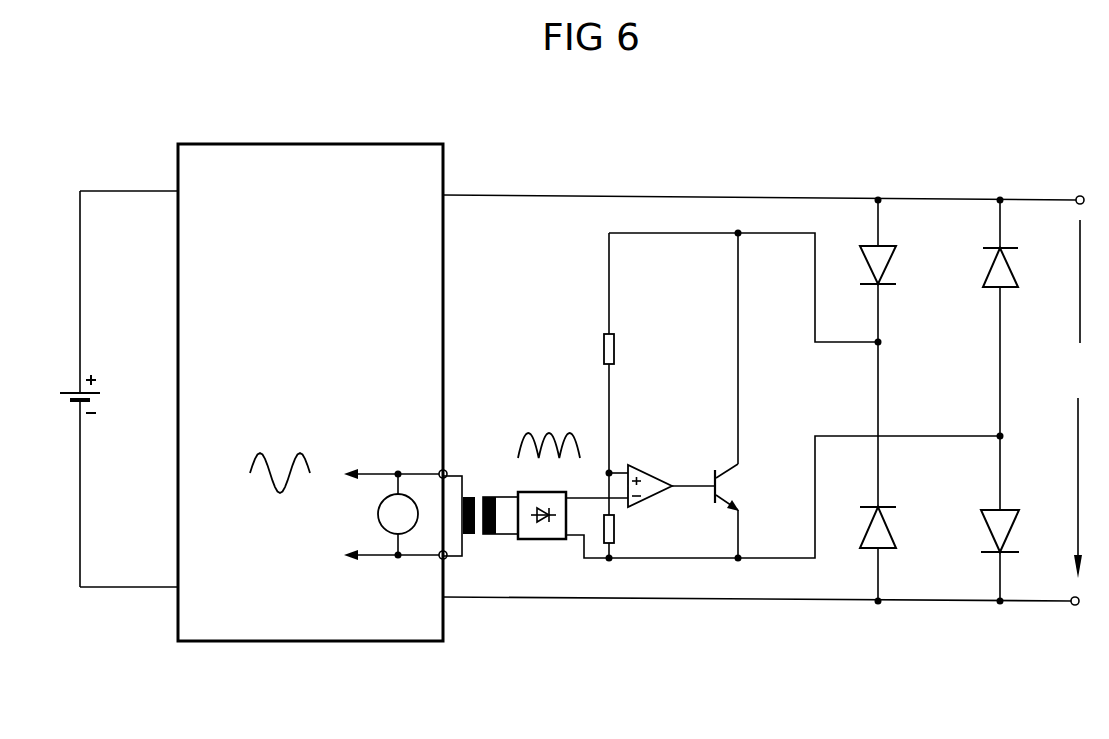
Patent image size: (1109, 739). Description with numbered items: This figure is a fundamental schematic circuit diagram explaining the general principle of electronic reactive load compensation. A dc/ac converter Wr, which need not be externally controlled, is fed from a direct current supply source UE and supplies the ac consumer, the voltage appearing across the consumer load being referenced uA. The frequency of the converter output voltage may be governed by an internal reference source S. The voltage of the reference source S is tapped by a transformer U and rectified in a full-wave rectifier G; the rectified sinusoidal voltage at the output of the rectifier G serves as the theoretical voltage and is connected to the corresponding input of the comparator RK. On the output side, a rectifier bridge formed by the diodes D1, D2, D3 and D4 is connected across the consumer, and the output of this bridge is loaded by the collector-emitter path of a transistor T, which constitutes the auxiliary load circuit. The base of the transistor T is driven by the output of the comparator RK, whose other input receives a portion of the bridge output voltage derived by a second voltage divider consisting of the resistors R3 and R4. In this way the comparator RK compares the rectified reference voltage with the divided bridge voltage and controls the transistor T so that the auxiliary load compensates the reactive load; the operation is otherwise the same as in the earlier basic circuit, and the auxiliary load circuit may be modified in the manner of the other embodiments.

The dc/ac converter Wr is at (310, 392).
The direct current supply source UE is at (92, 394).
The reference source S is at (398, 514).
The transformer U is at (480, 523).
The full-wave rectifier G is at (510, 600).
The resistor R3 is at (593, 353).
The resistor R4 is at (622, 515).
The second comparator RK is at (651, 498).
The transistor T is at (733, 487).
The diode D1 is at (895, 271).
The diode D2 is at (1017, 318).
The diode D3 is at (892, 471).
The diode D4 is at (1014, 518).
The voltage across the ac consumer load impedance uA is at (1075, 399).